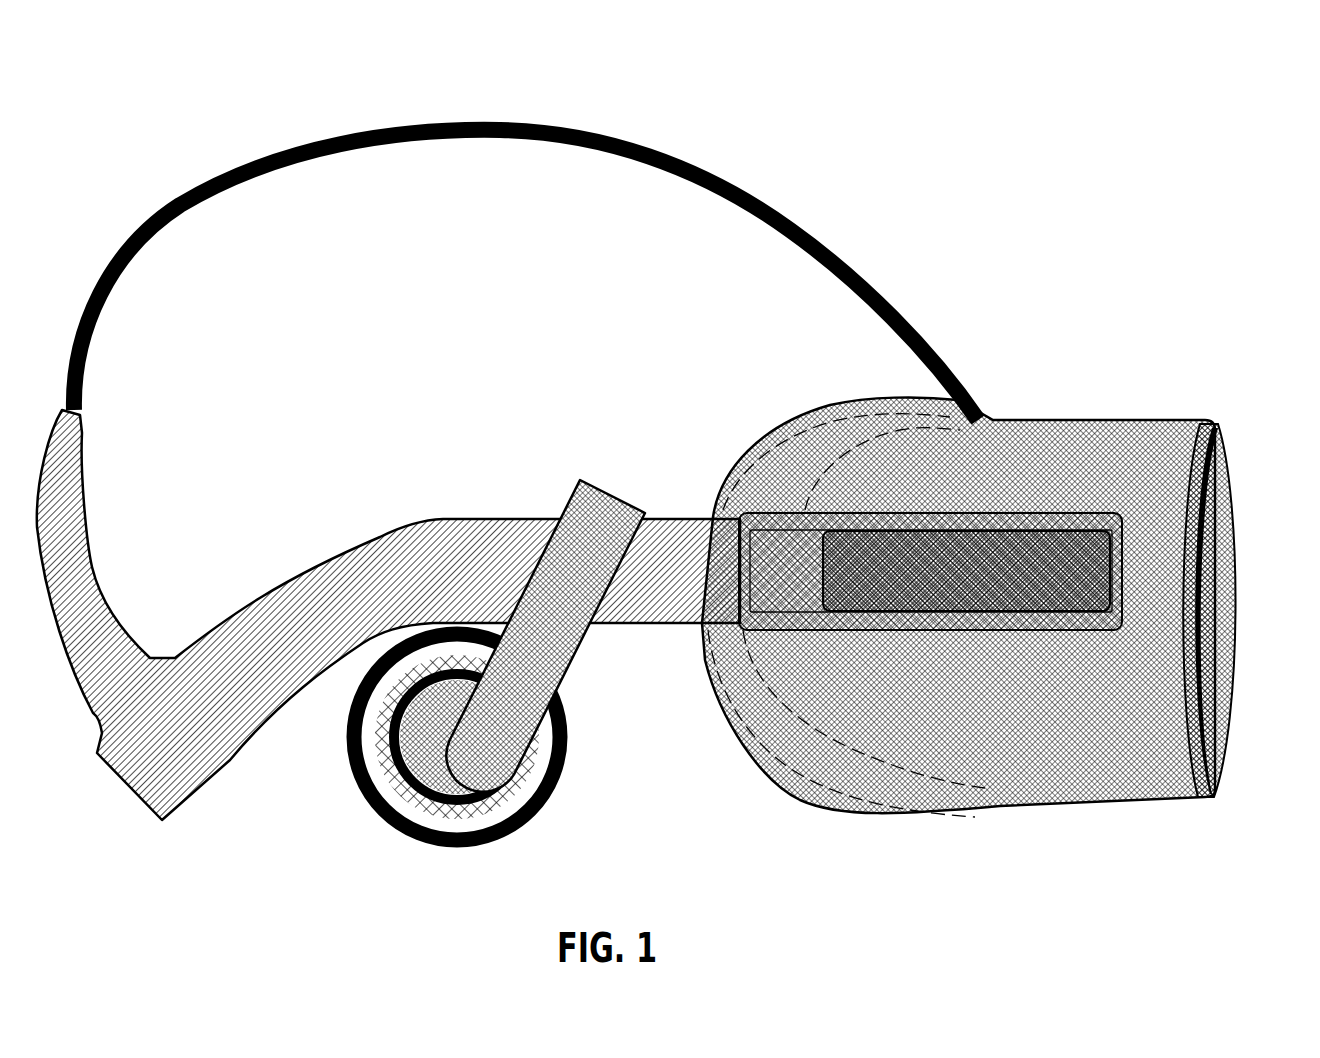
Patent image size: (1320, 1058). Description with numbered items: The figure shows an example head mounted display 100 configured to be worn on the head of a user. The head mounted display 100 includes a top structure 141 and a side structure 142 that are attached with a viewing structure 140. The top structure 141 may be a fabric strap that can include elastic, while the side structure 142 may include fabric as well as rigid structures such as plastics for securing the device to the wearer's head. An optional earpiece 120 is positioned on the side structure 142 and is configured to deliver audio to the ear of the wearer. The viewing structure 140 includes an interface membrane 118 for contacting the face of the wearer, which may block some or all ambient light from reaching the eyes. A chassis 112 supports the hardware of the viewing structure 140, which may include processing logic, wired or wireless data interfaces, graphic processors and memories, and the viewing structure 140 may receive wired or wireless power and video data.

The head mounted display 100 is at (1100, 100).
The chassis 112 is at (1220, 450).
The interface membrane 118 is at (732, 452).
The earpiece 120 is at (540, 838).
The viewing structure 140 is at (1035, 724).
The top structure 141 is at (673, 151).
The side structure 142 is at (410, 518).